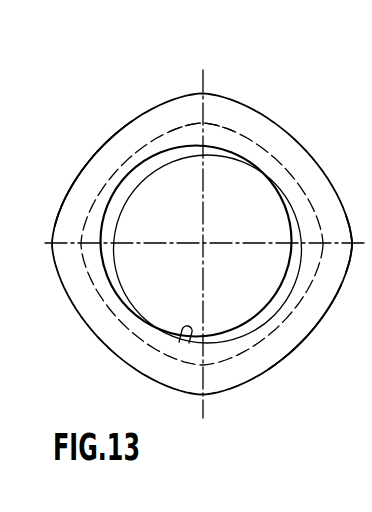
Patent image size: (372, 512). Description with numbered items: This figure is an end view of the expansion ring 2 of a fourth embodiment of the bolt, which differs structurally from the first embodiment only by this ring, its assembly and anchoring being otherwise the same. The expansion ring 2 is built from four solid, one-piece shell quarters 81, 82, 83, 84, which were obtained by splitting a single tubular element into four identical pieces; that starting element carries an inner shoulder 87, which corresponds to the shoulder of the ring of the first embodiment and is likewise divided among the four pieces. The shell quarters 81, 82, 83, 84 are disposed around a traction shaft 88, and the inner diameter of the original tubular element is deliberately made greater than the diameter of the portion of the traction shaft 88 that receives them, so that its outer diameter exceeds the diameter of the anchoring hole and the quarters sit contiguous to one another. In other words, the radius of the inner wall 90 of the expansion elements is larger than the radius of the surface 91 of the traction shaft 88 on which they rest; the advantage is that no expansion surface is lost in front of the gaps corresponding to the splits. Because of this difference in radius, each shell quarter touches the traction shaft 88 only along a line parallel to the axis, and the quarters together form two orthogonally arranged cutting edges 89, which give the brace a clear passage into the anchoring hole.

The expansion ring 2 is at (140, 91).
The shell quarter 81 is at (118, 342).
The shell quarter 82 is at (363, 336).
The shell quarter 83 is at (368, 146).
The shell quarter 84 is at (84, 198).
The inner shoulder 87 is at (275, 77).
The traction shaft 88 is at (225, 192).
The cutting edge 89 is at (349, 246).
The inner wall 90 is at (182, 344).
The surface of the traction shaft 91 is at (218, 340).